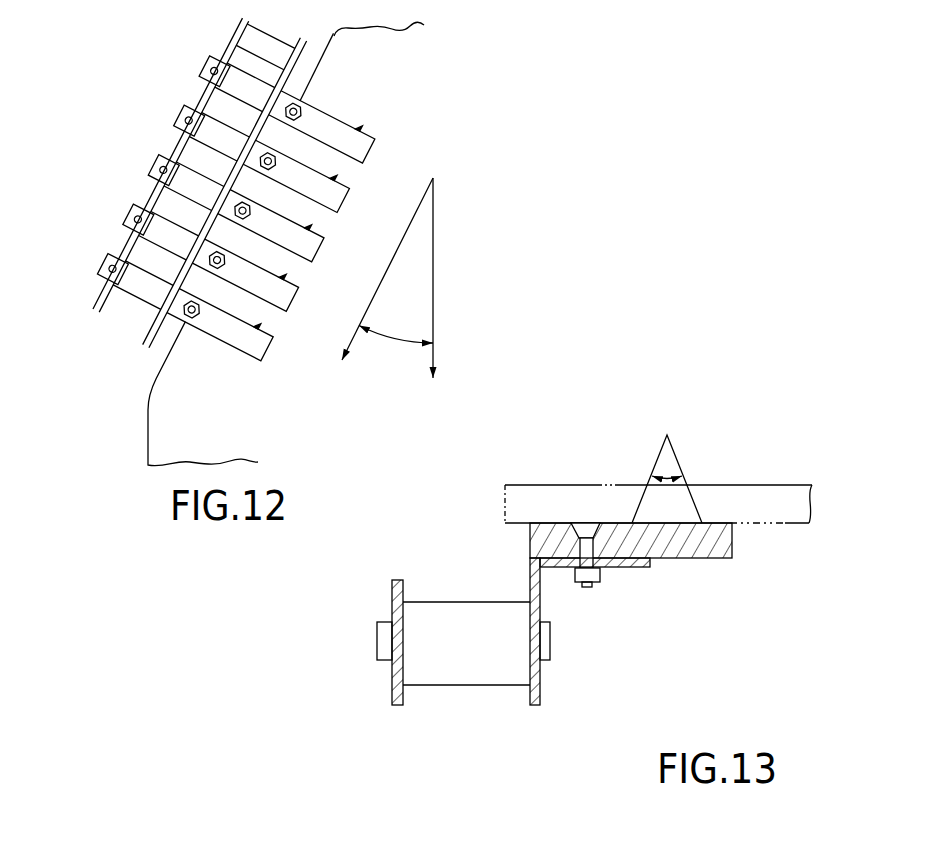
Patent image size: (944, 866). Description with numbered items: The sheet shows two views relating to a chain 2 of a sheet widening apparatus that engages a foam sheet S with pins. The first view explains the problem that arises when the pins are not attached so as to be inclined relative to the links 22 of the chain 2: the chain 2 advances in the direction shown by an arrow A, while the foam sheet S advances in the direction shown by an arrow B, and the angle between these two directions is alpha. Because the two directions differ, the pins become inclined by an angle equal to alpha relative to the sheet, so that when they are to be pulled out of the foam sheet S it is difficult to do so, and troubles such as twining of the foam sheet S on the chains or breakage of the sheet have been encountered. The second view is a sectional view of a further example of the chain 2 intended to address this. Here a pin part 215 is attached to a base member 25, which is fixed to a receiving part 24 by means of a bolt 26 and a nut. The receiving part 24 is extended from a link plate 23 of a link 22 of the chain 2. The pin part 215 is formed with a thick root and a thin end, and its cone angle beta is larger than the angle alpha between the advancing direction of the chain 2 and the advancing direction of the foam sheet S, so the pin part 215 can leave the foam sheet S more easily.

In FIG. 12, the chain 2 is at (239, 200).
In FIG. 13, the pin part 215 is at (673, 503).
In FIG. 13, the link 22 is at (541, 708).
In FIG. 13, the link plate 23 is at (541, 674).
In FIG. 13, the receiving part 24 is at (651, 568).
In FIG. 13, the base member 25 is at (731, 557).
In FIG. 13, the bolt 26 is at (582, 533).
In FIG. 12, the foam sheet S is at (178, 437).
In FIG. 13, the foam sheet S is at (788, 497).
In FIG. 12, the advancing direction of the chain A is at (367, 305).
In FIG. 12, the advancing direction of the foam sheet B is at (435, 313).